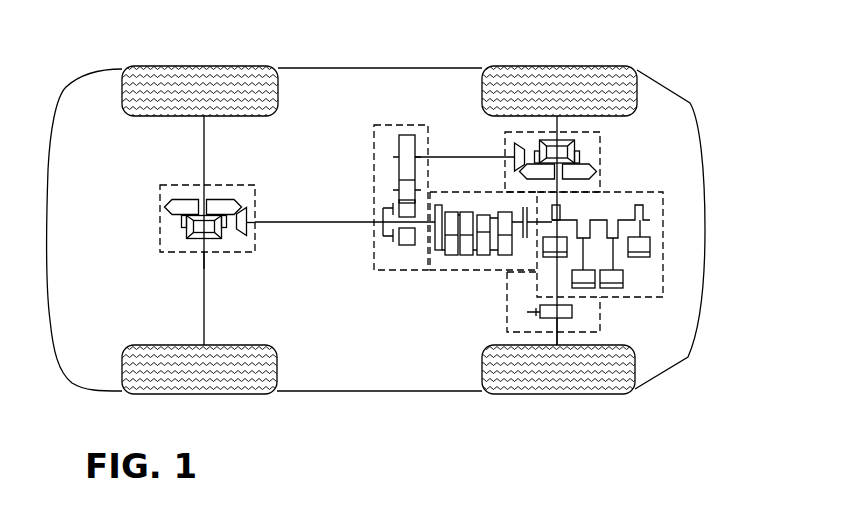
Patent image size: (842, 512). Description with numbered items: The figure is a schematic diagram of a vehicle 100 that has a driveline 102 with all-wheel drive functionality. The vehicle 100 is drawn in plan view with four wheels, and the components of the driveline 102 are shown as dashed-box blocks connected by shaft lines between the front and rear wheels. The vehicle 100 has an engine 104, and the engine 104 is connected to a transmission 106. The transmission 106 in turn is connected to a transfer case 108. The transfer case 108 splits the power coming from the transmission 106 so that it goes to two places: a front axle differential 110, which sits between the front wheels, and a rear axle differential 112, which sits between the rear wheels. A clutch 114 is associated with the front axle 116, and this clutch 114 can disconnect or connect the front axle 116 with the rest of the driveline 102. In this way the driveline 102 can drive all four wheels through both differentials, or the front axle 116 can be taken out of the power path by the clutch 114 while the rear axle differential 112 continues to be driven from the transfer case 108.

The vehicle 100 is at (669, 38).
The driveline 102 is at (333, 183).
The engine 104 is at (663, 277).
The transmission 106 is at (502, 307).
The transfer case 108 is at (398, 125).
The front axle differential 110 is at (600, 150).
The rear axle differential 112 is at (237, 253).
The clutch 114 is at (600, 317).
The front axle 116 is at (557, 340).